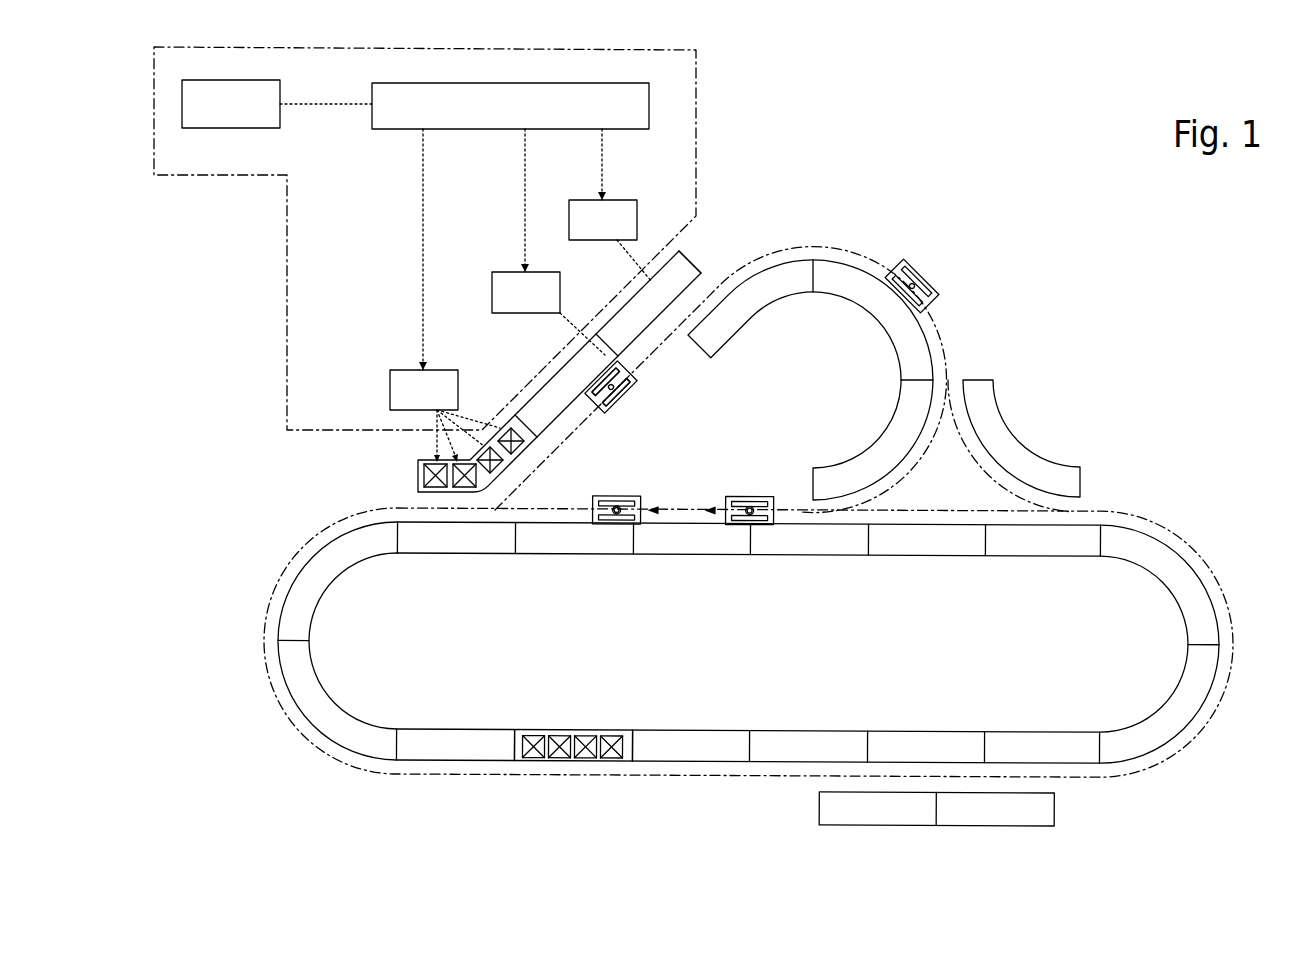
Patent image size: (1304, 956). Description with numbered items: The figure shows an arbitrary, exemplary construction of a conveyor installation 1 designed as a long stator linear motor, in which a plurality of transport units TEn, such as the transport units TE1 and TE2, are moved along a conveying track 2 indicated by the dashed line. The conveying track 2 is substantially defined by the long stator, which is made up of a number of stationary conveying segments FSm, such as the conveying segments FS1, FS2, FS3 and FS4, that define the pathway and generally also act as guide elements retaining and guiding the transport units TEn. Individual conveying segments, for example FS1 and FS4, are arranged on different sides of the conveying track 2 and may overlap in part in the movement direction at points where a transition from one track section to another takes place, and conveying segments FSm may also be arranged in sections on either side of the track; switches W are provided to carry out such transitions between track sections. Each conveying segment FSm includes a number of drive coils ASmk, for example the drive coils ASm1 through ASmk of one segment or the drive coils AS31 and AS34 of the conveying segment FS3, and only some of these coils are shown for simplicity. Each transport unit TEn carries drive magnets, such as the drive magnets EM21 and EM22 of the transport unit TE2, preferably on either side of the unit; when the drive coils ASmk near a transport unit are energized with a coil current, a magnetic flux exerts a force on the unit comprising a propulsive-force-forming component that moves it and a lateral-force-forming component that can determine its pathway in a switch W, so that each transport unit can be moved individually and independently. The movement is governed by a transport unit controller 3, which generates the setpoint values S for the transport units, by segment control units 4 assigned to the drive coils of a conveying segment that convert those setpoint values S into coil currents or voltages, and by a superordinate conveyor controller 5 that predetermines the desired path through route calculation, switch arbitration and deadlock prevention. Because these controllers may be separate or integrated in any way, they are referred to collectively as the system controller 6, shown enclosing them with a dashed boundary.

The conveyor installation 1 is at (1248, 779).
The conveying track 2 is at (1183, 543).
The transport unit controller 3 is at (513, 121).
The segment control unit 4 is at (637, 217).
The conveyor controller 5 is at (240, 119).
The system controller 6 is at (697, 112).
The setpoint values S is at (504, 249).
The switch W is at (968, 358).
The first conveying segment FS1 is at (690, 262).
The second conveying segment FS2 is at (587, 360).
The third conveying segment FS3 is at (417, 473).
The fourth conveying segment FS4 is at (795, 257).
The conveying segment FSm is at (580, 728).
The first transport unit TE1 is at (893, 270).
The second transport unit TE2 is at (627, 397).
The transport unit TEn is at (732, 527).
The drive magnet of the second transport unit EM21 is at (595, 412).
The drive magnet of the second transport unit EM22 is at (637, 382).
The drive coil of the third conveying segment AS31 is at (417, 488).
The drive coil of the third conveying segment AS34 is at (500, 427).
The first drive coil of a conveying segment ASm1 is at (532, 730).
The drive coil ASmk is at (620, 730).